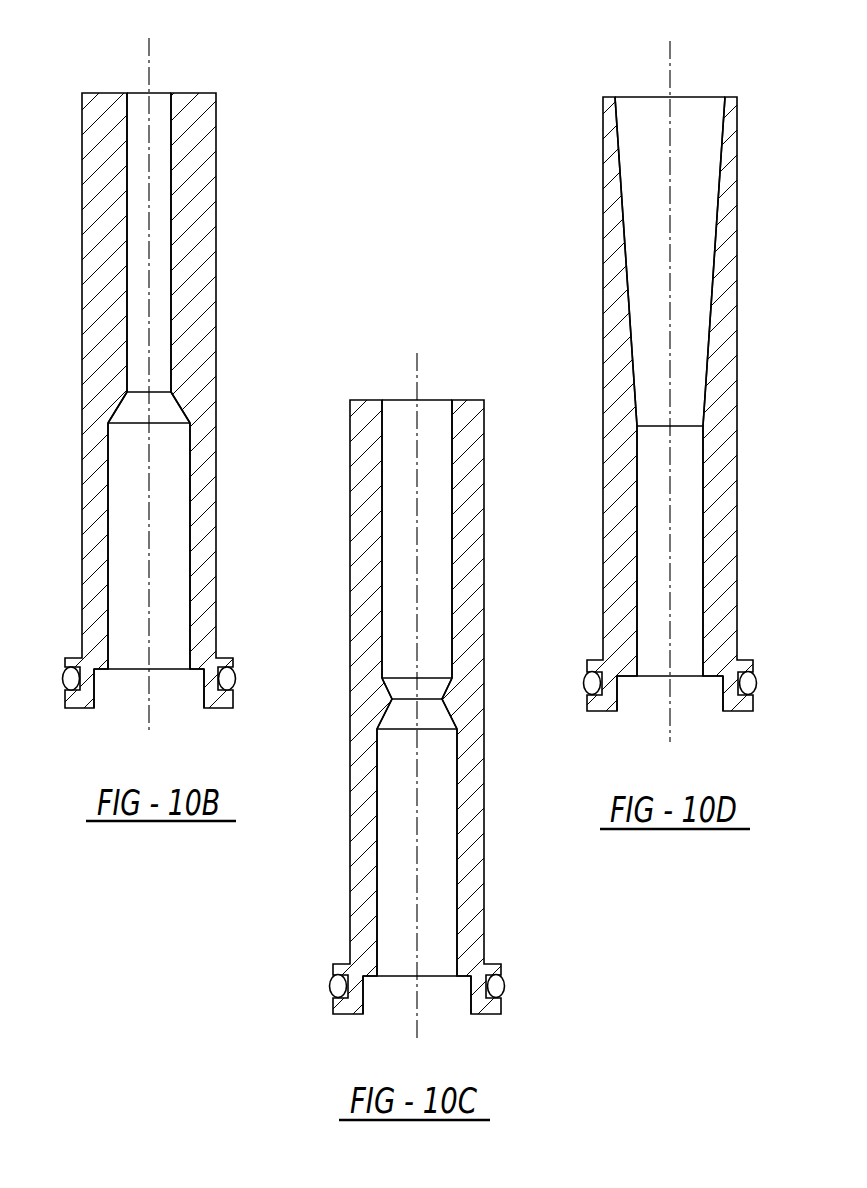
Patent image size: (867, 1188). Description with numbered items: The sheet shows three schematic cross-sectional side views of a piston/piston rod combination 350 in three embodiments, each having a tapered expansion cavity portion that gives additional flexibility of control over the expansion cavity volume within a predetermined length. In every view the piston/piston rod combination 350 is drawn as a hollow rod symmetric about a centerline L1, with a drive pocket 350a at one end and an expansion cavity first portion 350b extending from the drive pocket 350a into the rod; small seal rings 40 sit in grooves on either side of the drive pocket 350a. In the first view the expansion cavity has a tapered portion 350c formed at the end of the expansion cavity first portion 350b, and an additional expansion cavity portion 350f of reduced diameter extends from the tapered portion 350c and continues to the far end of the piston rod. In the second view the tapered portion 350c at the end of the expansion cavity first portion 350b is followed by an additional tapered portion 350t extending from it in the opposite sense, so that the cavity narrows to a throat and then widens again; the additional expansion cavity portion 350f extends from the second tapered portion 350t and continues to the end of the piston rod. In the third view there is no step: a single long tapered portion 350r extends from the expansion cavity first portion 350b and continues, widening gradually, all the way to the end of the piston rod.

In FIG. 10B, the piston/piston rod combination 350 is at (192, 708).
In FIG. 10C, the piston/piston rod combination 350 is at (485, 1015).
In FIG. 10D, the piston/piston rod combination 350 is at (737, 283).
In FIG. 10B, the drive pocket 350a is at (120, 690).
In FIG. 10C, the drive pocket 350a is at (393, 1000).
In FIG. 10D, the drive pocket 350a is at (690, 702).
In FIG. 10B, the expansion cavity first portion 350b is at (93, 521).
In FIG. 10C, the expansion cavity first portion 350b is at (393, 885).
In FIG. 10D, the expansion cavity first portion 350b is at (648, 461).
In FIG. 10B, the tapered portion 350c is at (165, 410).
In FIG. 10C, the tapered portion 350c is at (437, 718).
In FIG. 10B, the additional expansion cavity portion 350f is at (162, 192).
In FIG. 10C, the additional expansion cavity portion 350f is at (437, 576).
In FIG. 10C, the additional tapered portion 350t is at (430, 688).
In FIG. 10D, the tapered portion 350r is at (648, 285).
In FIG. 10B, the O-ring seal 40 is at (236, 680).
In FIG. 10C, the O-ring seal 40 is at (505, 986).
In FIG. 10D, the O-ring seal 40 is at (757, 682).
In FIG. 10B, the longitudinal axis L1 is at (150, 46).
In FIG. 10C, the longitudinal axis L1 is at (418, 354).
In FIG. 10D, the longitudinal axis L1 is at (670, 54).